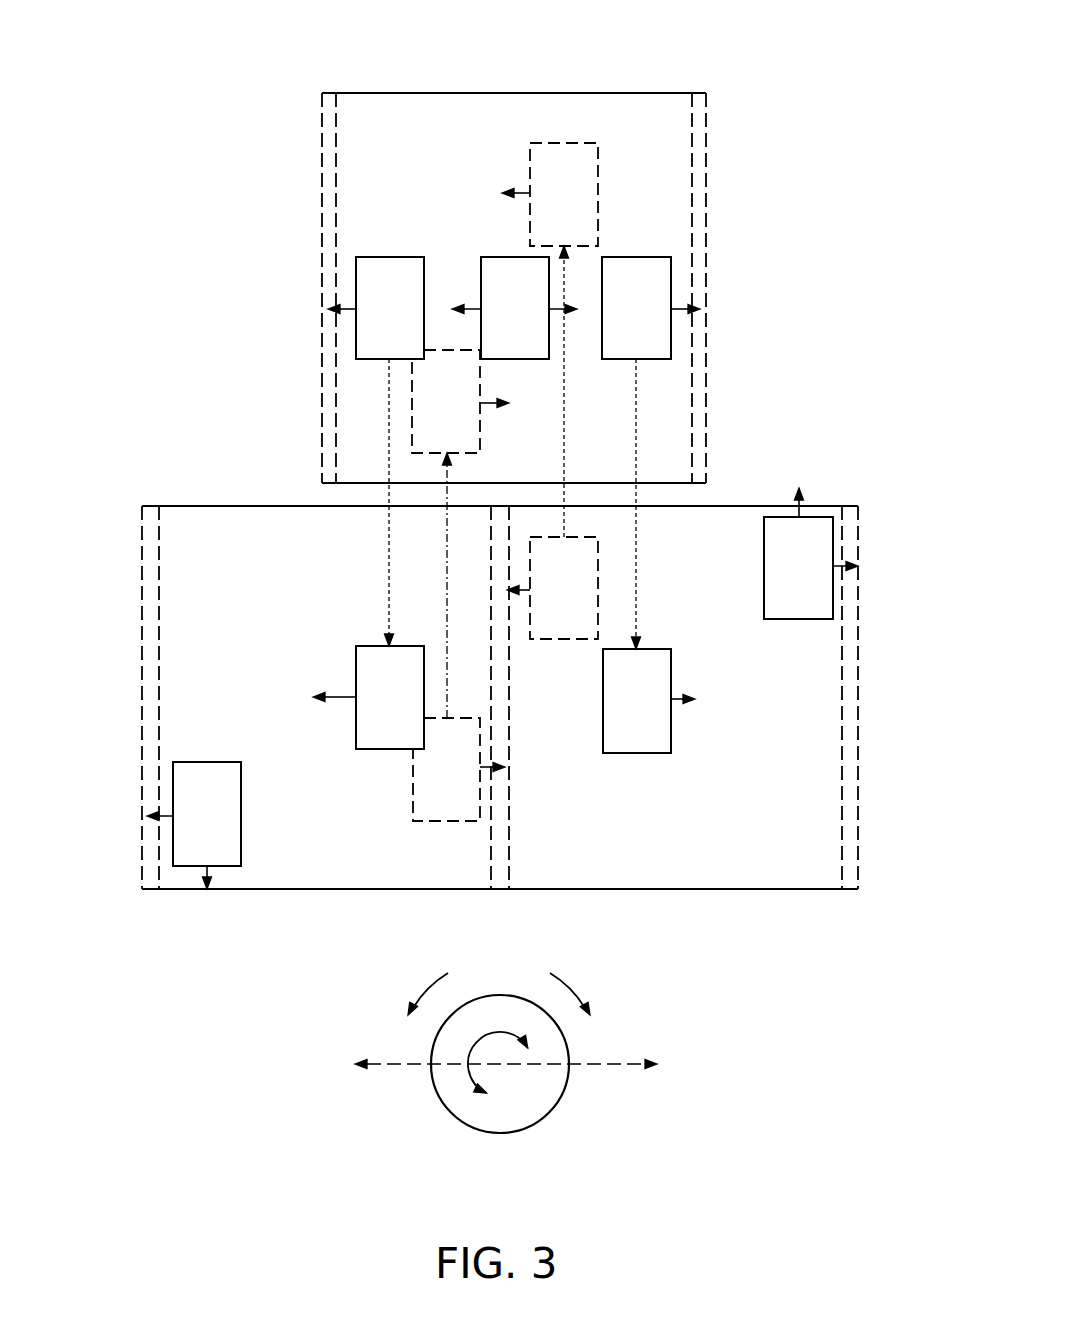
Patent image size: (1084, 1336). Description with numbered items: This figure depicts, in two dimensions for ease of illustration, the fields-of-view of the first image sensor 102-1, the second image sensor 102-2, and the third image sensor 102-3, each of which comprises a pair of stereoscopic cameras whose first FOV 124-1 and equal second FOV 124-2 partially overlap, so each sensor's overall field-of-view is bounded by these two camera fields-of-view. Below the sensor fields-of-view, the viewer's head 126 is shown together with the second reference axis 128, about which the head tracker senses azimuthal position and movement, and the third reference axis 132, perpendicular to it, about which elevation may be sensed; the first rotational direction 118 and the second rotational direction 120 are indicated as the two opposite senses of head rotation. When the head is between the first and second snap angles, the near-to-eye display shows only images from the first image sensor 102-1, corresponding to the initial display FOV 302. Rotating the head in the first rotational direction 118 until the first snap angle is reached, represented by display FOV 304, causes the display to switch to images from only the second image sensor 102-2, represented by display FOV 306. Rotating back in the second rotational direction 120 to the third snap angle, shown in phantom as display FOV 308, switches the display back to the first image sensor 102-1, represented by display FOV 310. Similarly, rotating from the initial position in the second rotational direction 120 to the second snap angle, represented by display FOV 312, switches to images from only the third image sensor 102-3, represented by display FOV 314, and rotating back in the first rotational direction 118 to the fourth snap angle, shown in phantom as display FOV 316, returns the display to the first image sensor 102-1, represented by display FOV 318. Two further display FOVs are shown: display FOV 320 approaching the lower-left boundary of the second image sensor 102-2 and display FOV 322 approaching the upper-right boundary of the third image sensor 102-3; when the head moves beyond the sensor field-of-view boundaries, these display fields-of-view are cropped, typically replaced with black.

The first image sensor 102-1 is at (530, 82).
The second image sensor 102-2 is at (238, 482).
The third image sensor 102-3 is at (742, 485).
The first FOV 124-1 is at (322, 173).
The second FOV 124-2 is at (336, 223).
The initial display FOV 302 is at (490, 257).
The display FOV 304 is at (388, 257).
The display FOV 306 is at (363, 646).
The display FOV 308 is at (413, 773).
The display FOV 310 is at (480, 440).
The display FOV 312 is at (629, 257).
The display FOV 314 is at (672, 670).
The display FOV 316 is at (572, 639).
The display FOV 318 is at (598, 167).
The display FOV 320 is at (205, 762).
The display FOV 322 is at (763, 549).
The first rotational direction 118 is at (428, 990).
The second rotational direction 120 is at (573, 990).
The viewer's head 126 is at (559, 1104).
The second reference axis 128 is at (500, 1064).
The third reference axis 132 is at (393, 1066).